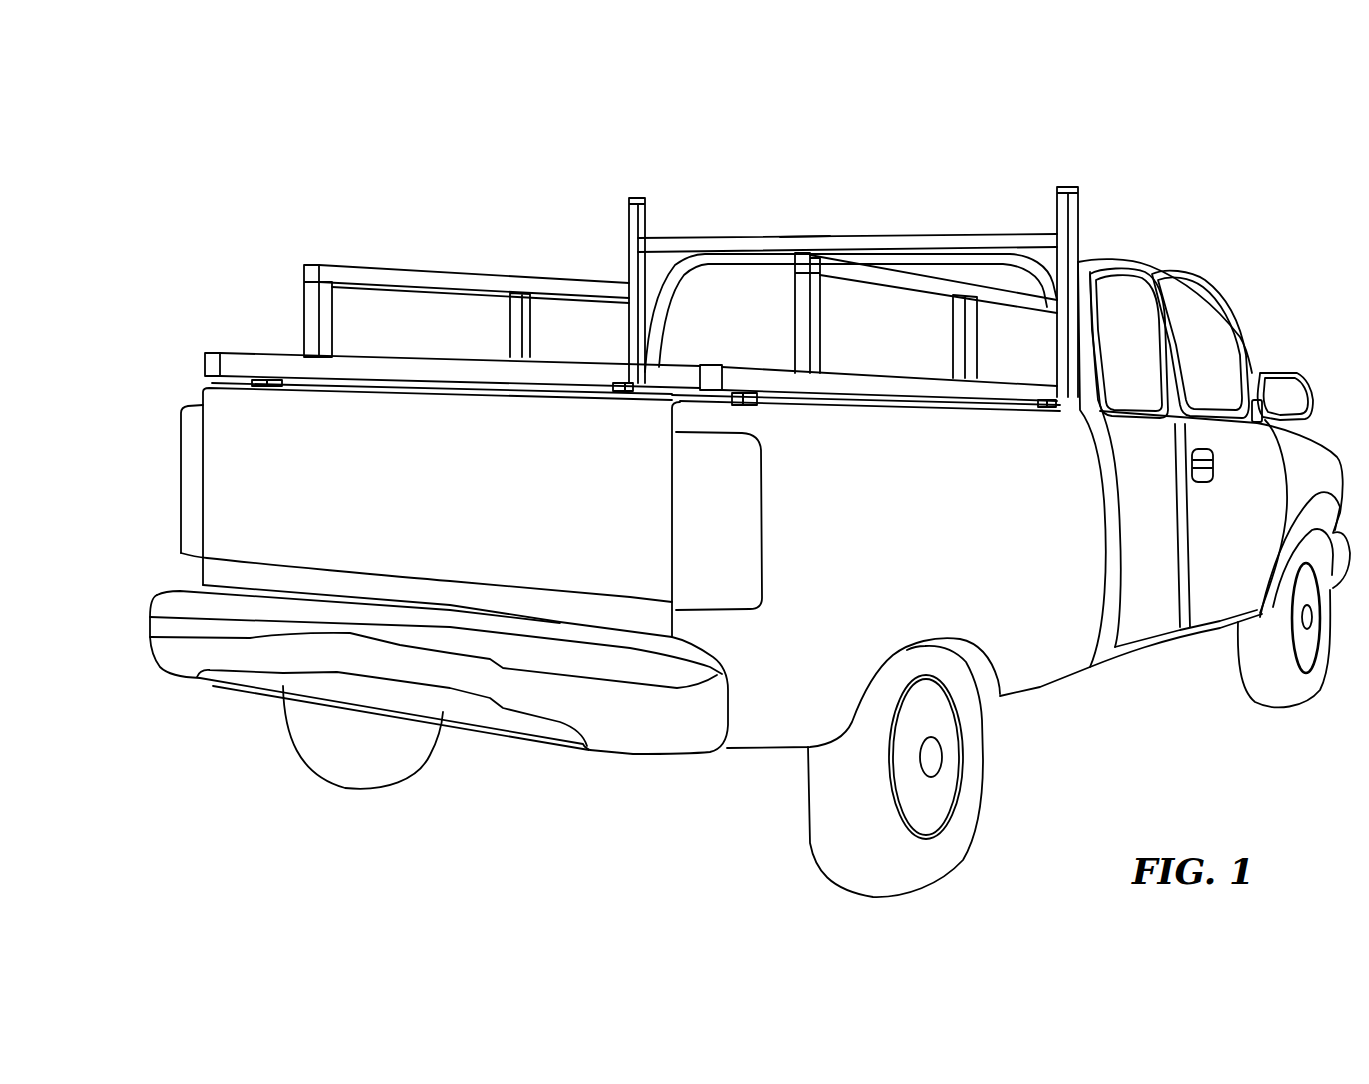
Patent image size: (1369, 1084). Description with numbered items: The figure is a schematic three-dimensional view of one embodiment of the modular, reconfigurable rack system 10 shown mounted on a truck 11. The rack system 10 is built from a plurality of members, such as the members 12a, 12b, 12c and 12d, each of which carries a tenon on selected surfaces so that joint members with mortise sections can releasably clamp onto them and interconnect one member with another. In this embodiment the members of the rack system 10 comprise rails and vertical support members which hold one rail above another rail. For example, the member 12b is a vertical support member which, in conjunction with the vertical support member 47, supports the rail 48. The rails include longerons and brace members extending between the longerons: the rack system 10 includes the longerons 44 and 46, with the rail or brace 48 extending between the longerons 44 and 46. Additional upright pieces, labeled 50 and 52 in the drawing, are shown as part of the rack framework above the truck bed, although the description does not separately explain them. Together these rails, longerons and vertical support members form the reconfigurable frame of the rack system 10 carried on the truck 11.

The modular, reconfigurable rack system 10 is at (939, 200).
The truck 11 is at (1204, 290).
The member 12a is at (657, 242).
The member (vertical support member) 12b is at (629, 270).
The member 12c is at (592, 369).
The member 12d is at (676, 376).
The longeron 44 is at (387, 266).
The longeron 46 is at (880, 280).
The vertical support member 47 is at (1079, 220).
The rail (brace) 48 is at (805, 236).
The rear post 50 is at (305, 311).
The intermediate post 52 is at (511, 328).